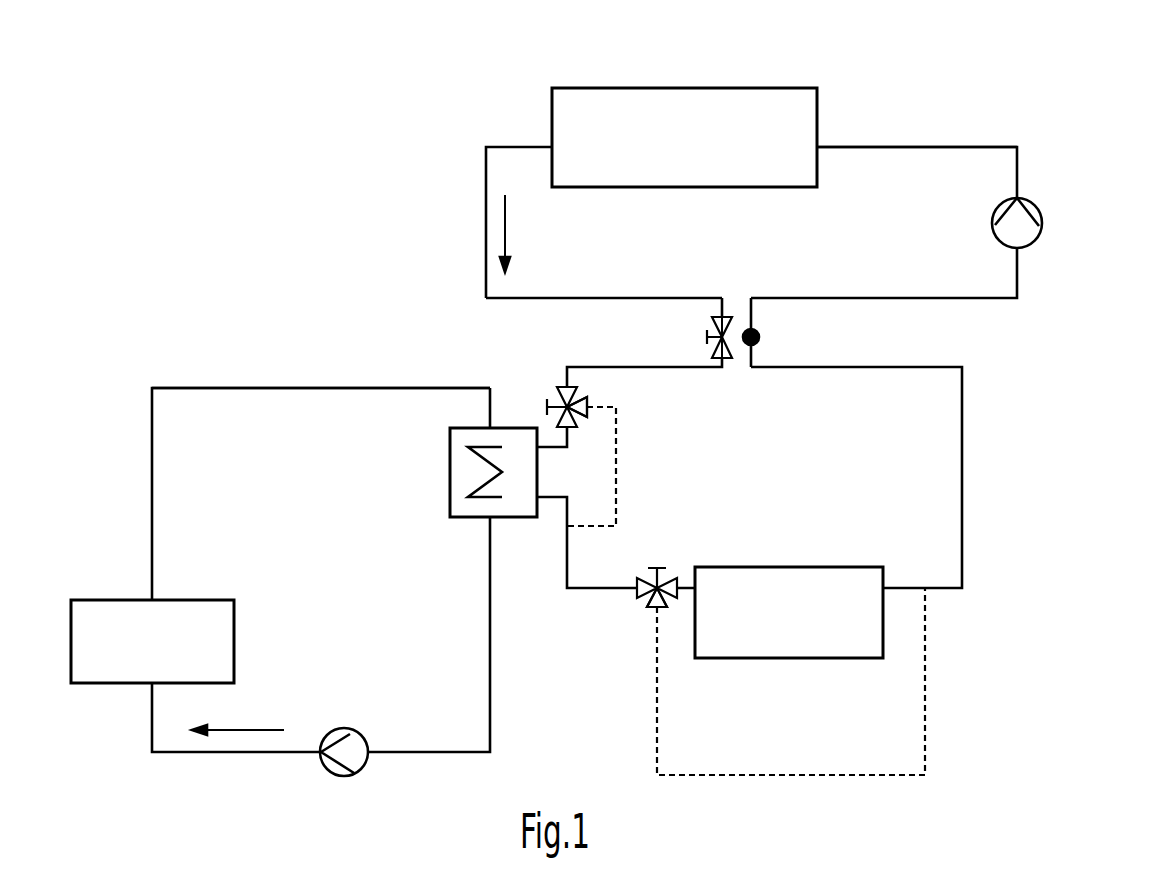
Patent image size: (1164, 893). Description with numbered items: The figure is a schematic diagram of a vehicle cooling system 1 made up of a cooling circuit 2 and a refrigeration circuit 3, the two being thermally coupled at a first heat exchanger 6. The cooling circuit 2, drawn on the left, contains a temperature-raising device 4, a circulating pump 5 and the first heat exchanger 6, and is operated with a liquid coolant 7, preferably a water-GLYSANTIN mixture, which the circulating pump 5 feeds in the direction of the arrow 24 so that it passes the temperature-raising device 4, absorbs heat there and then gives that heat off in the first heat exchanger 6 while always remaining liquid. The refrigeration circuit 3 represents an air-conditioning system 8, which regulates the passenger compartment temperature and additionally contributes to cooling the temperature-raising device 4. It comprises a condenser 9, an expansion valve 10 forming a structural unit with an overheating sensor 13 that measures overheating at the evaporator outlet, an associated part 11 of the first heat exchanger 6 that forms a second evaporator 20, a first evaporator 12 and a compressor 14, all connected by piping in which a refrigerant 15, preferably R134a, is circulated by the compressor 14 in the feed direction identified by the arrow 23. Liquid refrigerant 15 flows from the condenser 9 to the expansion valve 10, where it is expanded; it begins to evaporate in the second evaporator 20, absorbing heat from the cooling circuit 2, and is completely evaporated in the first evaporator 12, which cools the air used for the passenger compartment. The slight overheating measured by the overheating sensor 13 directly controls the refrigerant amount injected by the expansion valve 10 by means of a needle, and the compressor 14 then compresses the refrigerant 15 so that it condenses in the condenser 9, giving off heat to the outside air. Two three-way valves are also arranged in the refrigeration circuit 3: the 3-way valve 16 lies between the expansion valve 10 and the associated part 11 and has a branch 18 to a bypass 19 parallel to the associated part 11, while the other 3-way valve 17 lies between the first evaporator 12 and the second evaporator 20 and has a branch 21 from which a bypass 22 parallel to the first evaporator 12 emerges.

The vehicle cooling system 1 is at (310, 185).
The cooling circuit 2 is at (192, 343).
The refrigeration circuit 3 is at (978, 447).
The temperature-raising device 4 is at (110, 629).
The circulating pump 5 is at (362, 760).
The first heat exchanger 6 is at (455, 477).
The coolant 7 is at (296, 388).
The air-conditioning system 8 is at (1028, 357).
The condenser 9 is at (688, 113).
The expansion valve 10 is at (710, 330).
The associated part of the first heat exchanger 11 is at (512, 418).
The first evaporator 12 is at (780, 580).
The overheating sensor 13 is at (760, 337).
The compressor 14 is at (1040, 237).
The refrigerant 15 is at (928, 146).
The 3-way valve 16 is at (578, 398).
The 3-way valve 17 is at (668, 583).
The branch 18 is at (575, 410).
The bypass 19 is at (618, 477).
The second evaporator 20 is at (507, 487).
The branch 21 is at (652, 612).
The bypass 22 is at (780, 775).
The arrow 23 is at (505, 222).
The arrow 24 is at (249, 728).